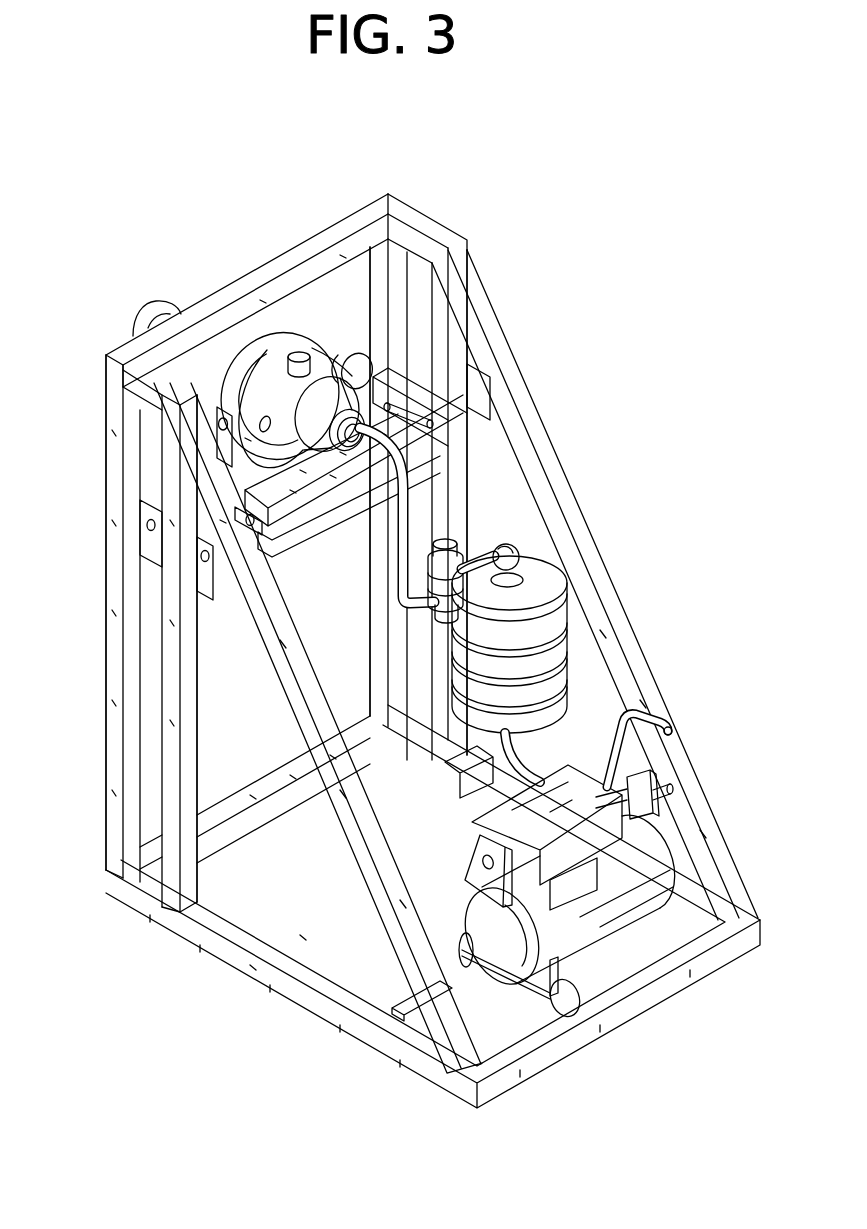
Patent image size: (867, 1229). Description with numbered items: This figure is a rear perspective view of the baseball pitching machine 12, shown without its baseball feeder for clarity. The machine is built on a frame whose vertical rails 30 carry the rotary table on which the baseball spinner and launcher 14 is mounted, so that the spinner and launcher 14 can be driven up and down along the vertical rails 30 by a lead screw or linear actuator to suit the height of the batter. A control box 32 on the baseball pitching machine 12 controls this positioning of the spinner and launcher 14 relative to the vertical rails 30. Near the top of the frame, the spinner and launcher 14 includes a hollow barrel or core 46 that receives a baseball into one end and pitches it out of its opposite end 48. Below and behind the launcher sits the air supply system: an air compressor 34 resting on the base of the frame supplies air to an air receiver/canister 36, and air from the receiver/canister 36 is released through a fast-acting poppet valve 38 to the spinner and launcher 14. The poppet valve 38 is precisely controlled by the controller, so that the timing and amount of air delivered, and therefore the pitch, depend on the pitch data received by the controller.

The baseball pitching machine 12 is at (486, 255).
The baseball spinner and launcher 14 is at (316, 318).
The vertical rails 30 is at (108, 667).
The control box 32 is at (488, 418).
The air compressor 34 is at (462, 903).
The air receiver/canister 36 is at (580, 676).
The fast-acting poppet valve 38 is at (470, 548).
The barrel or core 46 is at (162, 311).
The end 48 is at (163, 315).